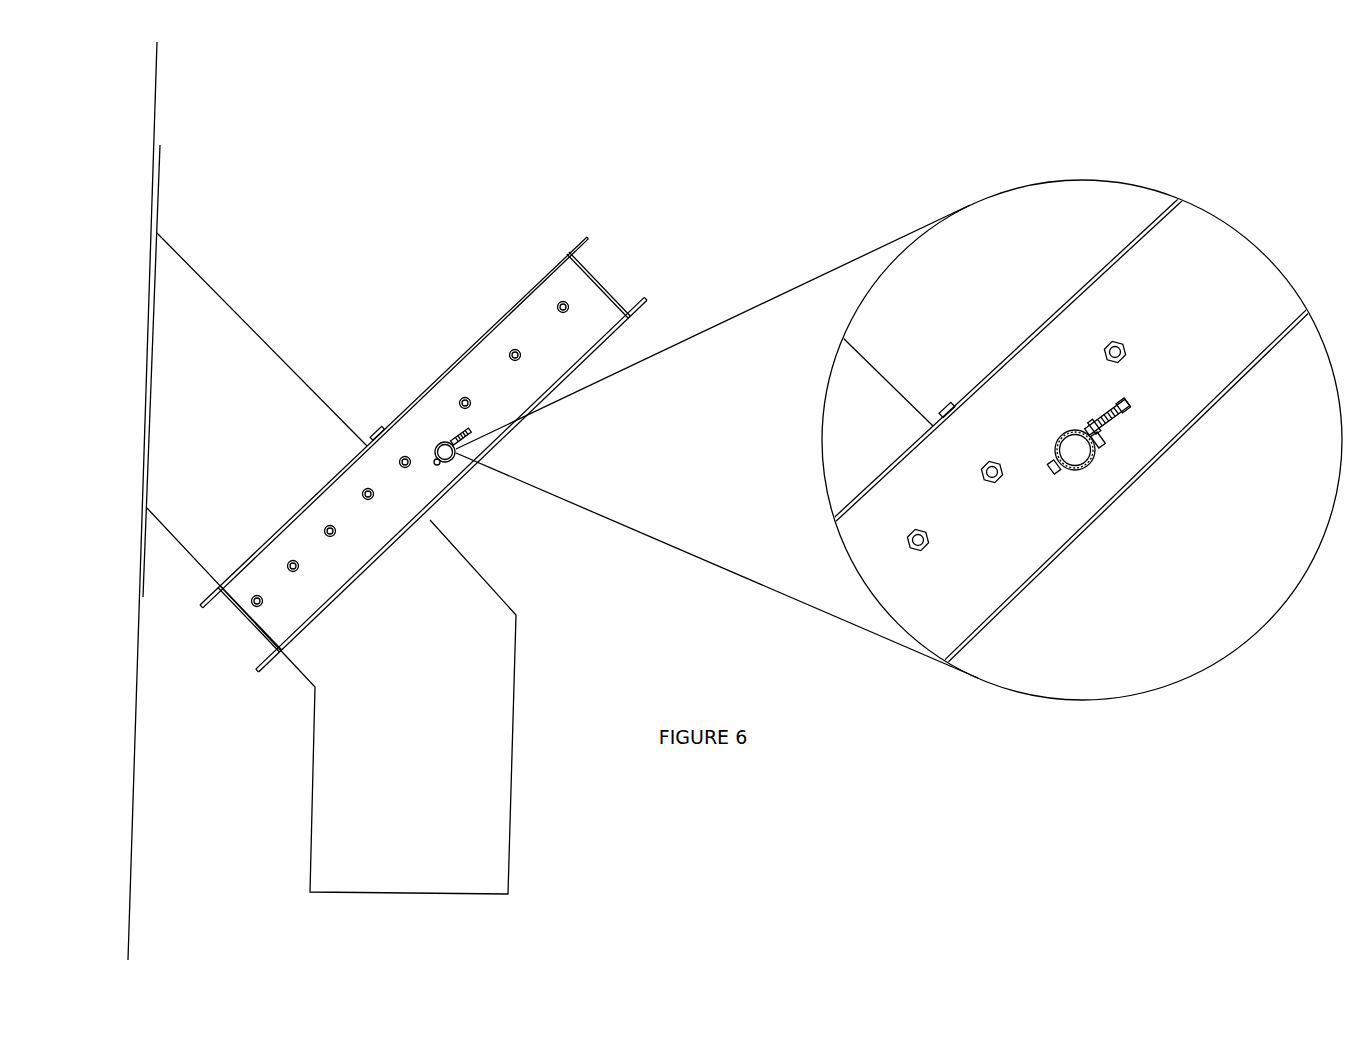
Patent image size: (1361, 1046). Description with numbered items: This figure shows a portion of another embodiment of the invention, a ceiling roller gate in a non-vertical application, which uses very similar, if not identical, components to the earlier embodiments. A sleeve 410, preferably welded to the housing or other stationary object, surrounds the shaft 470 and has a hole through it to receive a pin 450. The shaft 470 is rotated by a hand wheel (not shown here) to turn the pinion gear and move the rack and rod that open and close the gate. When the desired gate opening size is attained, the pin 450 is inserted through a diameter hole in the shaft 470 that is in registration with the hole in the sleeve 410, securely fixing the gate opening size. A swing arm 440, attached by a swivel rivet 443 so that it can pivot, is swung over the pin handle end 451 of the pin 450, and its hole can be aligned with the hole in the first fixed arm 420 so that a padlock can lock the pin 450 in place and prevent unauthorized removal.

The sleeve 410 is at (1066, 434).
The first fixed arm 420 is at (1121, 410).
The swing arm 440 is at (1119, 404).
The swivel rivet 443 is at (1106, 411).
The pin 450 is at (1052, 470).
The pin handle end 451 is at (1101, 442).
The shaft 470 is at (1077, 455).